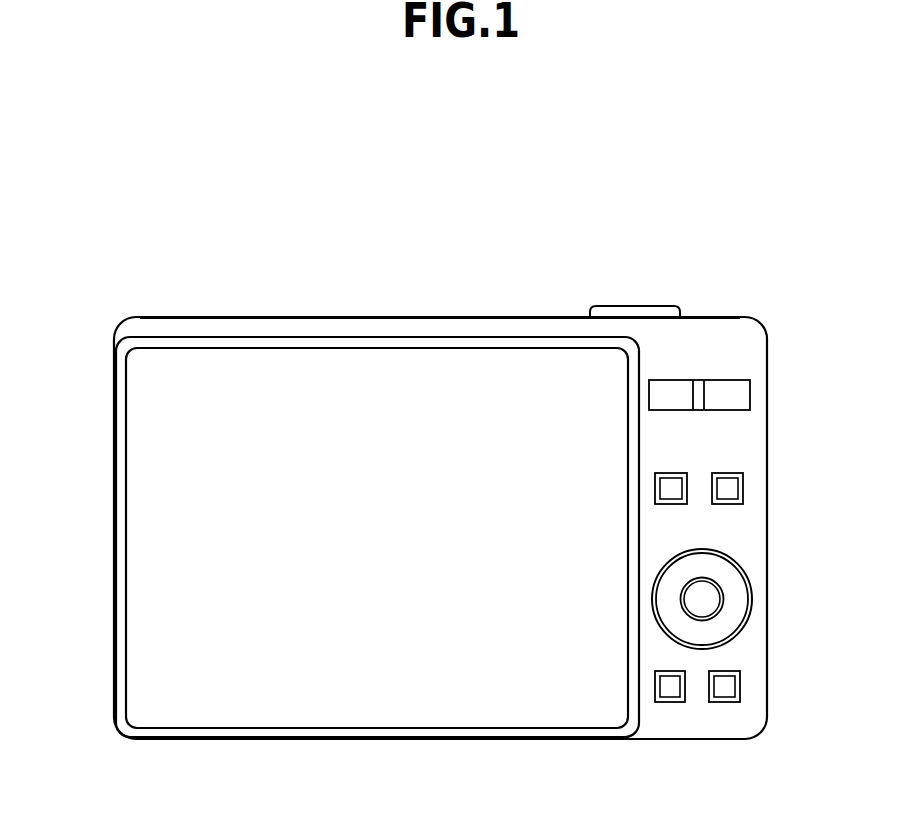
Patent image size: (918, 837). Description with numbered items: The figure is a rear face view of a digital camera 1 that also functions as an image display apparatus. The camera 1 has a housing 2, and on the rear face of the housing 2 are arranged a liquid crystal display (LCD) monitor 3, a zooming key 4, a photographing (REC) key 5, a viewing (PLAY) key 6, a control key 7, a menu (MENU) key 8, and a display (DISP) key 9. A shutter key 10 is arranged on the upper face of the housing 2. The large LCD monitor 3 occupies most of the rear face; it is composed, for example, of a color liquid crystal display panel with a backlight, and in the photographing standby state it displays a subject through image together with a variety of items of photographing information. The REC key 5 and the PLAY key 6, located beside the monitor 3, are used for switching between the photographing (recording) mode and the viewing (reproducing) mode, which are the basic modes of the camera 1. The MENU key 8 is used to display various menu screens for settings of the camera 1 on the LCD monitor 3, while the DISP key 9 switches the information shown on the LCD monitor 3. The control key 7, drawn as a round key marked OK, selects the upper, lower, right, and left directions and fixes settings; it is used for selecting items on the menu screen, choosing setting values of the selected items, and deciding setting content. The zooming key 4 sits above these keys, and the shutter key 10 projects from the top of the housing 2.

The digital camera 1 is at (433, 232).
The housing 2 is at (263, 317).
The liquid crystal display (LCD) monitor 3 is at (330, 702).
The zooming key 4 is at (738, 395).
The photographing (REC) key 5 is at (672, 473).
The viewing (PLAY) key 6 is at (743, 490).
The control key 7 is at (748, 580).
The menu (MENU) key 8 is at (740, 682).
The display (DISP) key 9 is at (655, 687).
The shutter key 10 is at (646, 306).